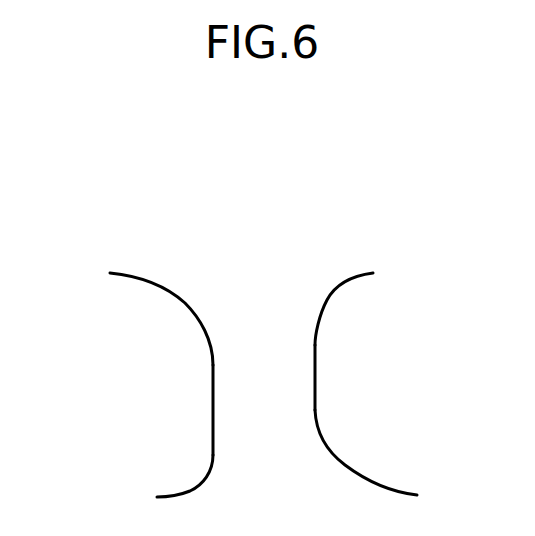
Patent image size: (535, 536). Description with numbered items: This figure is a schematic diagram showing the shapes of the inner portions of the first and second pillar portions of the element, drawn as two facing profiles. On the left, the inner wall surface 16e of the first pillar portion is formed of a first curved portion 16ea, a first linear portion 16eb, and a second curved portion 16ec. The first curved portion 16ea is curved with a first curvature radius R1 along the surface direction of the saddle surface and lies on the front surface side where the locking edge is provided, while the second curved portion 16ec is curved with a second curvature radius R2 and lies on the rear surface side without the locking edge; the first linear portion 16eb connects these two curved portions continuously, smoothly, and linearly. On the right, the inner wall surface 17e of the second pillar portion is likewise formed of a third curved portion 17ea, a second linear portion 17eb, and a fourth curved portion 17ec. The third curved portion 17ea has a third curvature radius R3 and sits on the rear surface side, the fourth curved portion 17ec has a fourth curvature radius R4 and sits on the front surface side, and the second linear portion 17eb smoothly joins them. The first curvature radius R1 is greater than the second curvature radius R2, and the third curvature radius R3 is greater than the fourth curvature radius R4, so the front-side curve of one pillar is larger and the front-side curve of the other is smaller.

The inner wall surface 16e is at (73, 178).
The first curved portion 16ea is at (184, 302).
The first linear portion 16eb is at (214, 374).
The second curved portion 16ec is at (213, 477).
The inner wall surface 17e is at (282, 179).
The third curved portion 17ea is at (348, 470).
The second linear portion 17eb is at (315, 378).
The fourth curved portion 17ec is at (342, 282).
The first curvature radius R1 is at (162, 287).
The second curvature radius R2 is at (117, 440).
The third curvature radius R3 is at (483, 373).
The fourth curvature radius R4 is at (410, 328).